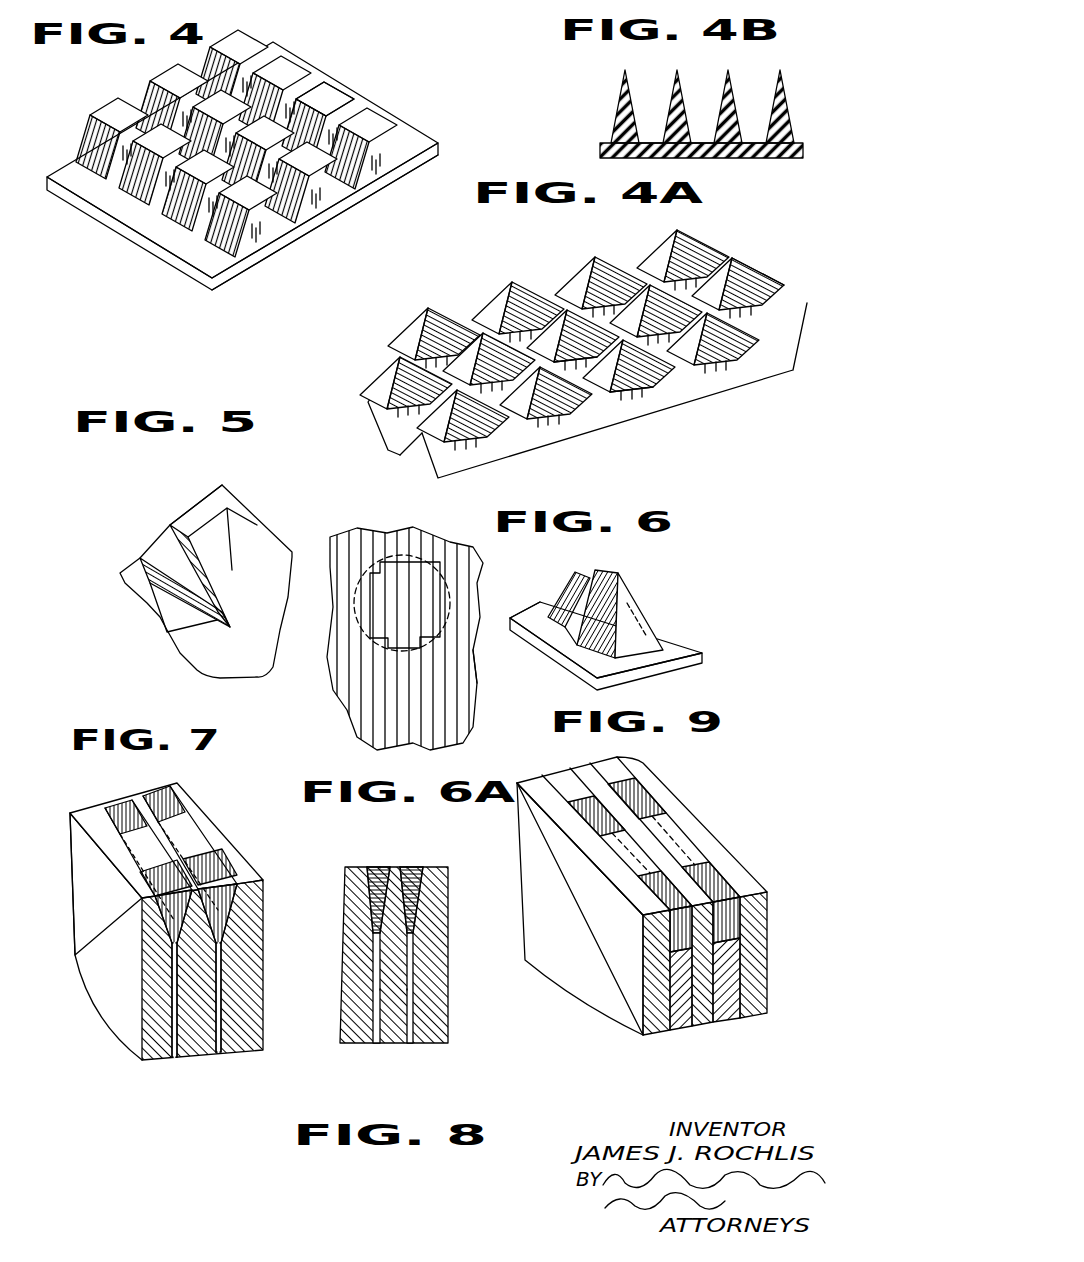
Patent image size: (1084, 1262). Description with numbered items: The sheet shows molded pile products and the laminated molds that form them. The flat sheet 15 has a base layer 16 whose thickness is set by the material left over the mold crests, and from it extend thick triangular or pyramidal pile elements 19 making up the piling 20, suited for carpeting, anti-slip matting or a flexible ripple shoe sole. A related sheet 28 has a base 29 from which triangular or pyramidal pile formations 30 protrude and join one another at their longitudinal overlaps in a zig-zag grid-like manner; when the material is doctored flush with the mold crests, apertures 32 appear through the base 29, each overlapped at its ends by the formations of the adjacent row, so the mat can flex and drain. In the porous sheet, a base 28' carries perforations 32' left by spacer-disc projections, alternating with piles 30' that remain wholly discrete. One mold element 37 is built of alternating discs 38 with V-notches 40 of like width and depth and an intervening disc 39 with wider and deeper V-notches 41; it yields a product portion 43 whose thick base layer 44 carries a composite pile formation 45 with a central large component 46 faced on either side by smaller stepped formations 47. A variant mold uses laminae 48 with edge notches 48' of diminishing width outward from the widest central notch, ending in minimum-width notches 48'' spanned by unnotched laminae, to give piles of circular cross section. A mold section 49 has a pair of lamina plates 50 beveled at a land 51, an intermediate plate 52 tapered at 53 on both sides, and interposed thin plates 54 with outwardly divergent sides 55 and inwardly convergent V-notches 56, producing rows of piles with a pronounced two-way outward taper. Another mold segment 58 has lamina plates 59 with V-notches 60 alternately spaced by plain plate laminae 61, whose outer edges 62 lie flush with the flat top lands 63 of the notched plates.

In FIG. 4, the flat sheet 15 is at (430, 138).
In FIG. 4, the base layer 16 is at (305, 230).
In FIG. 4, the pile elements 19 is at (327, 88).
In FIG. 4, the piling 20 is at (335, 110).
In FIG. 4A, the sheet 28 is at (410, 472).
In FIG. 4B, the base 28' is at (716, 167).
In FIG. 4A, the base 29 is at (527, 442).
In FIG. 4A, the pile formations 30 is at (572, 361).
In FIG. 4B, the piles 30' is at (705, 106).
In FIG. 4A, the apertures 32 is at (614, 342).
In FIG. 4B, the perforations 32' is at (707, 167).
In FIG. 6, the mold element 37 is at (295, 615).
In FIG. 5, the discs 38 is at (127, 580).
In FIG. 4A, the intervening disc 39 is at (727, 280).
In FIG. 5, the intervening disc 39 is at (150, 600).
In FIG. 5, the V-notches 40 is at (180, 545).
In FIG. 5, the V-notches 41 is at (208, 525).
In FIG. 6, the pile-like product portion 43 is at (455, 672).
In FIG. 6A, the pile-like product portion 43 is at (530, 648).
In FIG. 6A, the base layer 44 is at (688, 663).
In FIG. 6A, the composite pile formation 45 is at (637, 594).
In FIG. 6A, the central large component 46 is at (590, 623).
In FIG. 6A, the smaller formations 47 is at (575, 588).
In FIG. 6, the laminae 48 is at (404, 640).
In FIG. 6, the edge notches 48' is at (396, 577).
In FIG. 6, the minimum-width notches 48'' is at (363, 605).
In FIG. 7, the mold section 49 is at (140, 1063).
In FIG. 7, the lamina plates 50 is at (168, 1040).
In FIG. 8, the lamina plates 50 is at (432, 998).
In FIG. 7, the land 51 is at (228, 905).
In FIG. 7, the intermediate plate 52 is at (205, 1052).
In FIG. 8, the intermediate plate 52 is at (407, 1043).
In FIG. 7, the taper 53 is at (200, 880).
In FIG. 8, the taper 53 is at (410, 880).
In FIG. 7, the thin plates 54 is at (225, 970).
In FIG. 8, the thin plates 54 is at (370, 935).
In FIG. 8, the tapered sides 55 is at (378, 875).
In FIG. 7, the V-notches 56 is at (180, 865).
In FIG. 8, the V-notches 56 is at (388, 875).
In FIG. 9, the mold segment 58 is at (630, 1035).
In FIG. 9, the lamina plates 59 is at (682, 1025).
In FIG. 9, the V-notches 60 is at (640, 830).
In FIG. 9, the plain plate laminae 61 is at (660, 968).
In FIG. 9, the outer edges 62 is at (582, 827).
In FIG. 9, the top lands 63 is at (685, 856).